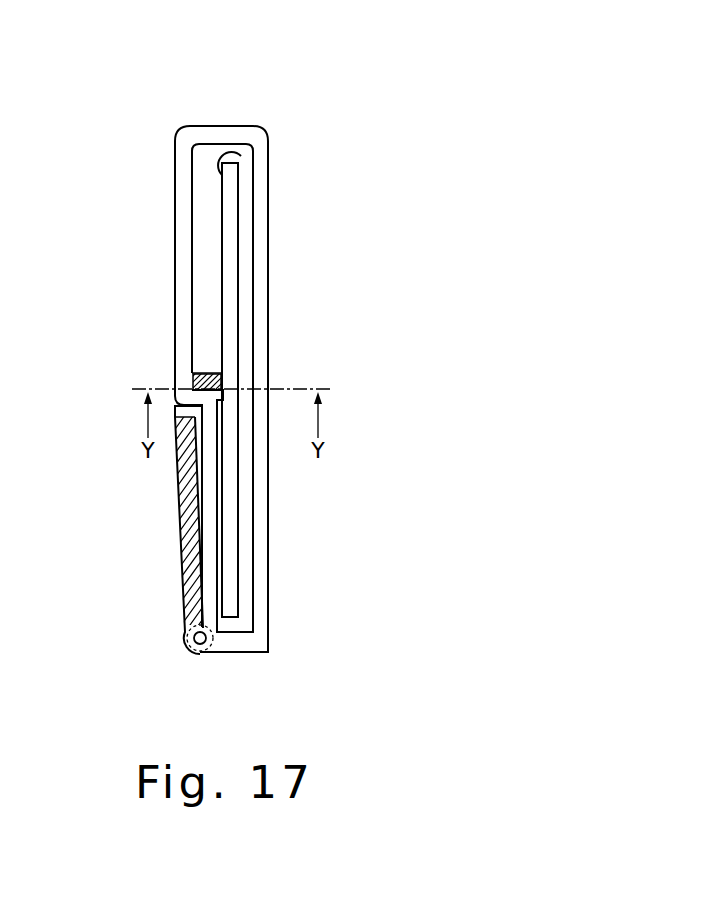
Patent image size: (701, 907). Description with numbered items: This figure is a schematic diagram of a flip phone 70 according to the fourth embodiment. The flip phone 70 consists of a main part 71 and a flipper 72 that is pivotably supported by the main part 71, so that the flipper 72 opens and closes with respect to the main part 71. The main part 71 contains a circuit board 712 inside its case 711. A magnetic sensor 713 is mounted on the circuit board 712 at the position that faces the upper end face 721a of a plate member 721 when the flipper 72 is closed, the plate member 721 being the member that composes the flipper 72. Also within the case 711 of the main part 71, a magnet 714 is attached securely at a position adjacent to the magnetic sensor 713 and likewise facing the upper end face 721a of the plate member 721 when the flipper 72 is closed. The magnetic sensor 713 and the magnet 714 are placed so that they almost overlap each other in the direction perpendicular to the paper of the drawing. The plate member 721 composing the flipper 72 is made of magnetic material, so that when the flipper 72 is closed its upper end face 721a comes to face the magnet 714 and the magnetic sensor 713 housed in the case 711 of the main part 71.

The flip phone 70 is at (290, 95).
The main part 71 is at (152, 177).
The case 711 is at (175, 205).
The circuit board 712 is at (241, 156).
The magnetic sensor 713 is at (215, 386).
The magnet 714 is at (208, 372).
The flipper 72 is at (148, 497).
The plate member 721 is at (178, 540).
The upper end face 721a is at (192, 408).